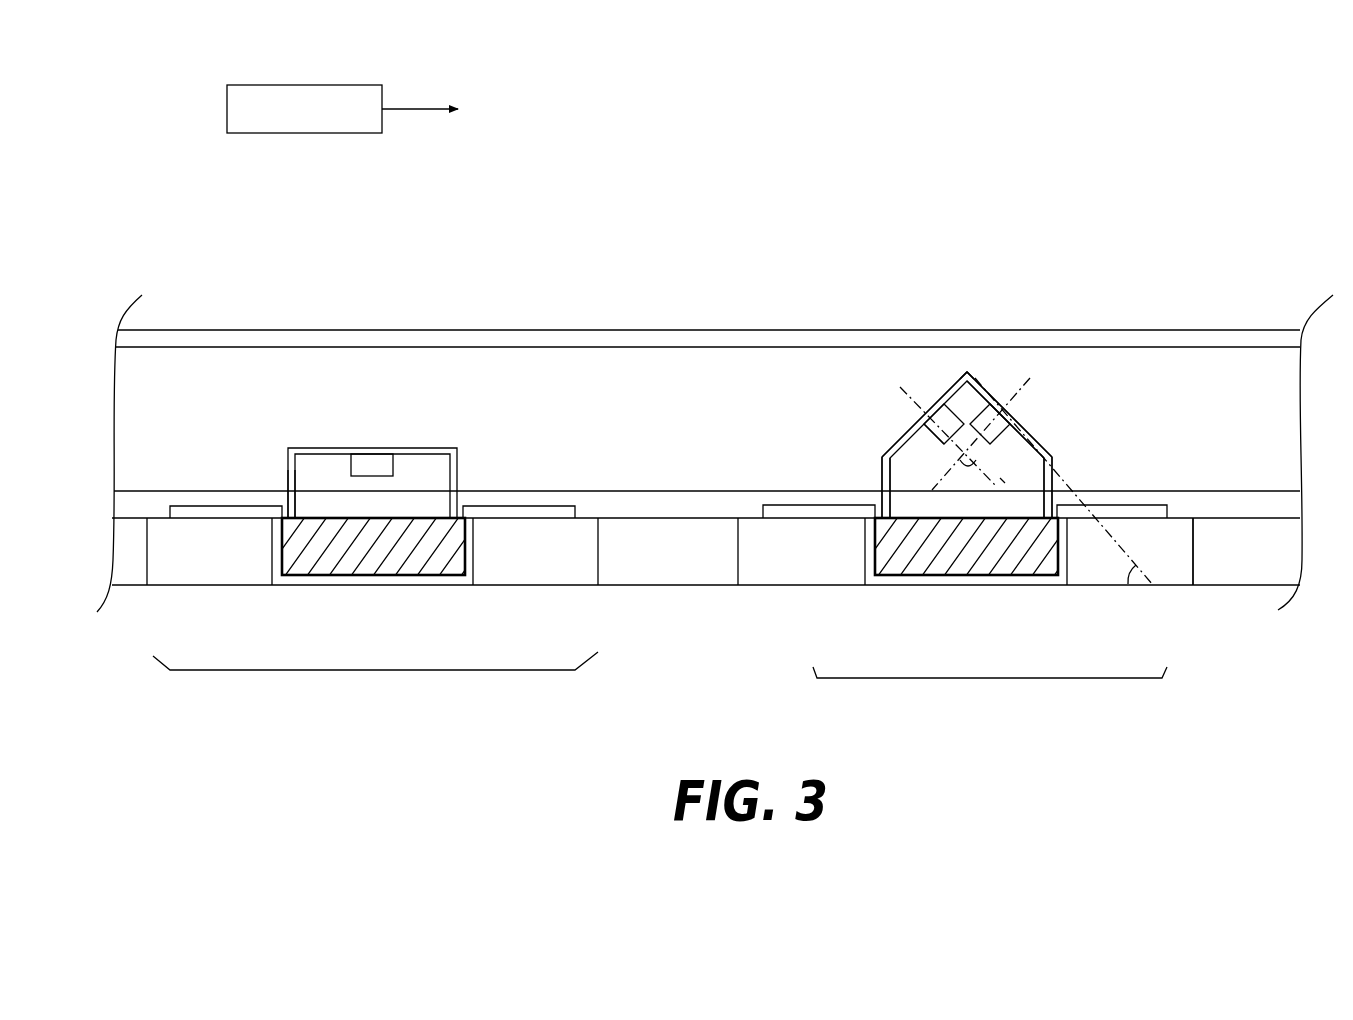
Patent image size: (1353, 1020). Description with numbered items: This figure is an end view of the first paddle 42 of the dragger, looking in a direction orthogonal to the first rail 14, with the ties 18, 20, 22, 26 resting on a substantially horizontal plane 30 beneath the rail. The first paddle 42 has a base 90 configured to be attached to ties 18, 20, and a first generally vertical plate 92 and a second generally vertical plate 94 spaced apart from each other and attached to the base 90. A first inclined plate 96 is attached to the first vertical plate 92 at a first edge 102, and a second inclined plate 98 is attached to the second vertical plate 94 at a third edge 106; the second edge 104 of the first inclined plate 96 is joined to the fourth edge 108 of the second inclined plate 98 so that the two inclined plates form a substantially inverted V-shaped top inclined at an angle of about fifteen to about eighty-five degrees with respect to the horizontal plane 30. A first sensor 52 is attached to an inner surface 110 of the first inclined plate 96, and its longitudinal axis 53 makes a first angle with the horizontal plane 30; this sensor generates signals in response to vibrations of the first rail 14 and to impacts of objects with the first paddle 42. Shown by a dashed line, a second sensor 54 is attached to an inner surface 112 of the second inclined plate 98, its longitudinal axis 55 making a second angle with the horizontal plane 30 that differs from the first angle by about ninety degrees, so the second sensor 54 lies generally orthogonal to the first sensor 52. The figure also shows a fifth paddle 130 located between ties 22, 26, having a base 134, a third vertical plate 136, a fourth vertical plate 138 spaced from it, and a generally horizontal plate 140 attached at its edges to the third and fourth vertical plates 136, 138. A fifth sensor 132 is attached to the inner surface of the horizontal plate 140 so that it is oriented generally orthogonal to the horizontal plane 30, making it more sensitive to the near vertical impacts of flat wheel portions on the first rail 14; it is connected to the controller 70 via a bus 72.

The first rail 14 is at (1185, 330).
The tie 18 is at (1175, 578).
The tie 20 is at (758, 575).
The tie 22 is at (533, 573).
The tie 26 is at (172, 575).
The horizontal plane 30 is at (1222, 582).
The first paddle 42 is at (972, 678).
The first sensor 52 is at (1011, 418).
The longitudinal axis 53 is at (1037, 398).
The second sensor 54 is at (926, 414).
The longitudinal axis 55 is at (903, 388).
The controller 70 is at (304, 109).
The bus 72 is at (414, 108).
The base 90 is at (1057, 587).
The first vertical plate 92 is at (1050, 477).
The second vertical plate 94 is at (883, 487).
The first inclined plate 96 is at (982, 399).
The second inclined plate 98 is at (928, 412).
The first edge 102 is at (1045, 464).
The second edge 104 is at (881, 462).
The third edge 106 is at (975, 375).
The fourth edge 108 is at (945, 403).
The inner surface 110 is at (1020, 451).
The inner surface 112 is at (913, 444).
The fifth paddle 130 is at (377, 670).
The fifth sensor 132 is at (372, 463).
The base 134 is at (510, 516).
The third vertical plate 136 is at (457, 465).
The fourth vertical plate 138 is at (292, 478).
The horizontal plate 140 is at (320, 448).